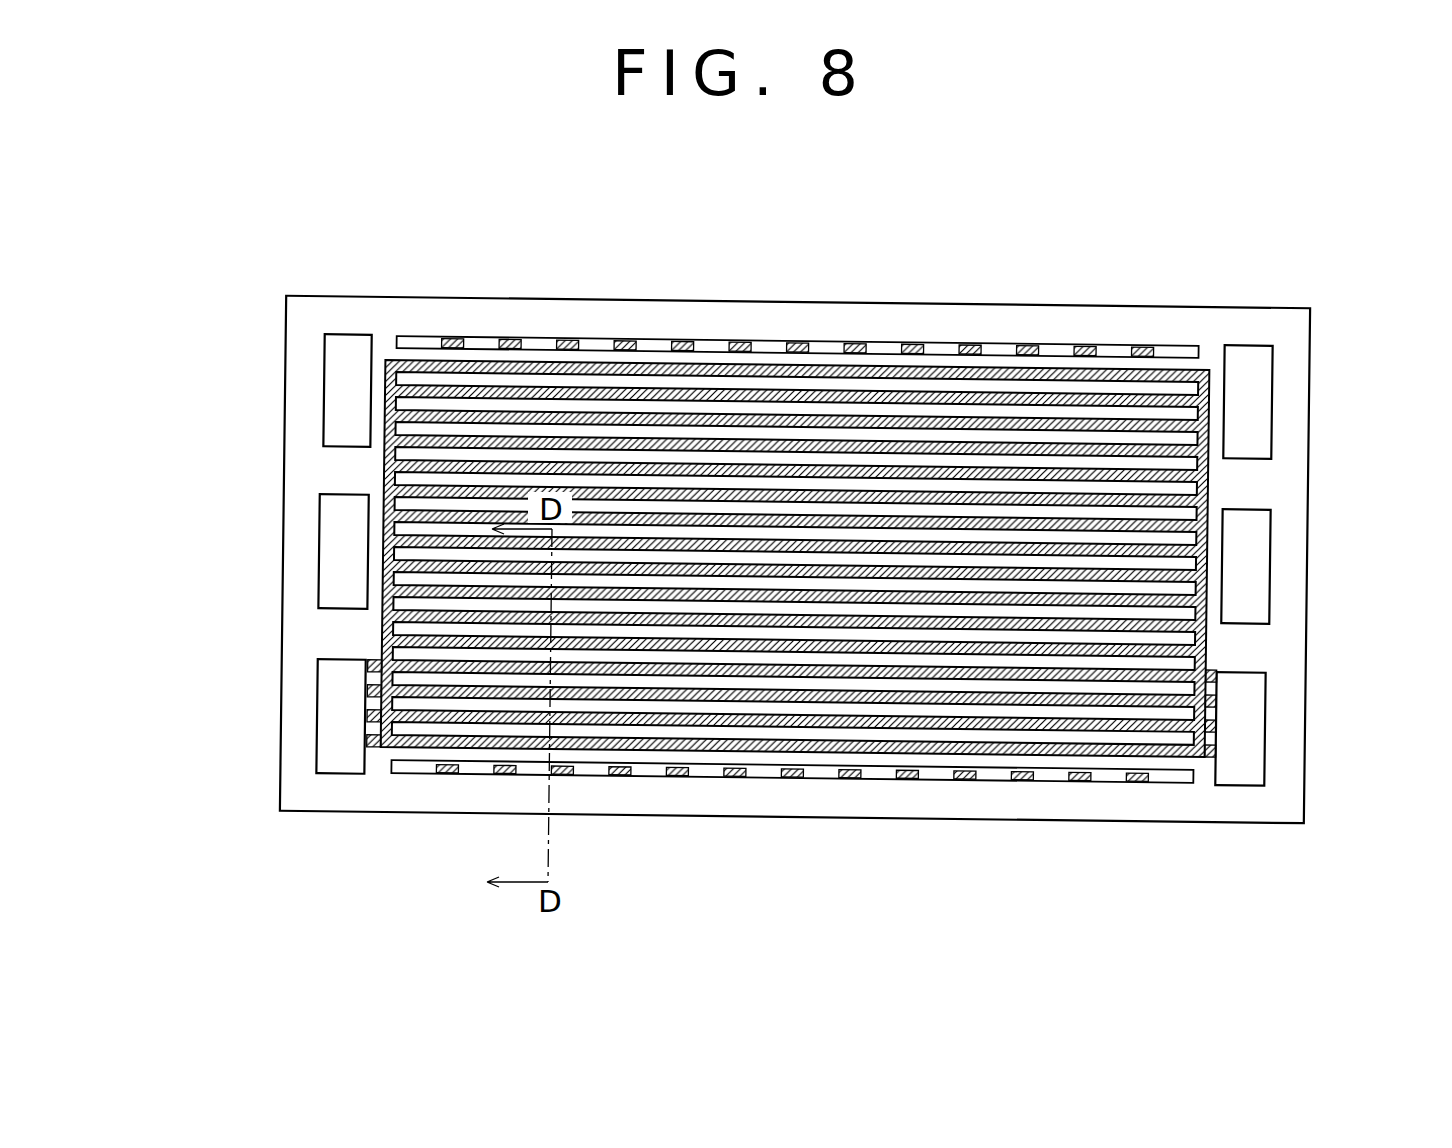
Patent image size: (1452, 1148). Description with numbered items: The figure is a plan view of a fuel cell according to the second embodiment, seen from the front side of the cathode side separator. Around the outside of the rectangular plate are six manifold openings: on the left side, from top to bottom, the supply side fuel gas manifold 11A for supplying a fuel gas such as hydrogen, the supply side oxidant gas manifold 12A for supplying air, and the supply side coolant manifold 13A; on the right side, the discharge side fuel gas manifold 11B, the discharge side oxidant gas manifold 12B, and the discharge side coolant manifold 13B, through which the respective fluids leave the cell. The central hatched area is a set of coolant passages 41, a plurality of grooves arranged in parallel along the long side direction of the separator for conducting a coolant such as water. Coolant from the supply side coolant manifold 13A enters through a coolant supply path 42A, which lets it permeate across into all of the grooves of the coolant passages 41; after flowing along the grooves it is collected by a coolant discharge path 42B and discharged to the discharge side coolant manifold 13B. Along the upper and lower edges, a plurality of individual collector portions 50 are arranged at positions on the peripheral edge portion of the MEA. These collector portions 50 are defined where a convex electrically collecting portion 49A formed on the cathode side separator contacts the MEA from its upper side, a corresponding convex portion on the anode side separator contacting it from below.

The supply side fuel gas manifold 11A is at (343, 373).
The discharge side fuel gas manifold 11B is at (1250, 383).
The supply side oxidant gas manifold 12A is at (343, 530).
The discharge side oxidant gas manifold 12B is at (1250, 538).
The supply side coolant manifold 13A is at (343, 740).
The discharge side coolant manifold 13B is at (1246, 706).
The coolant passages 41 is at (715, 362).
The coolant supply path 42A is at (387, 769).
The coolant discharge path 42B is at (1212, 782).
The collector portions 50 is at (778, 563).
The convex electrically collecting portion 49A is at (625, 340).